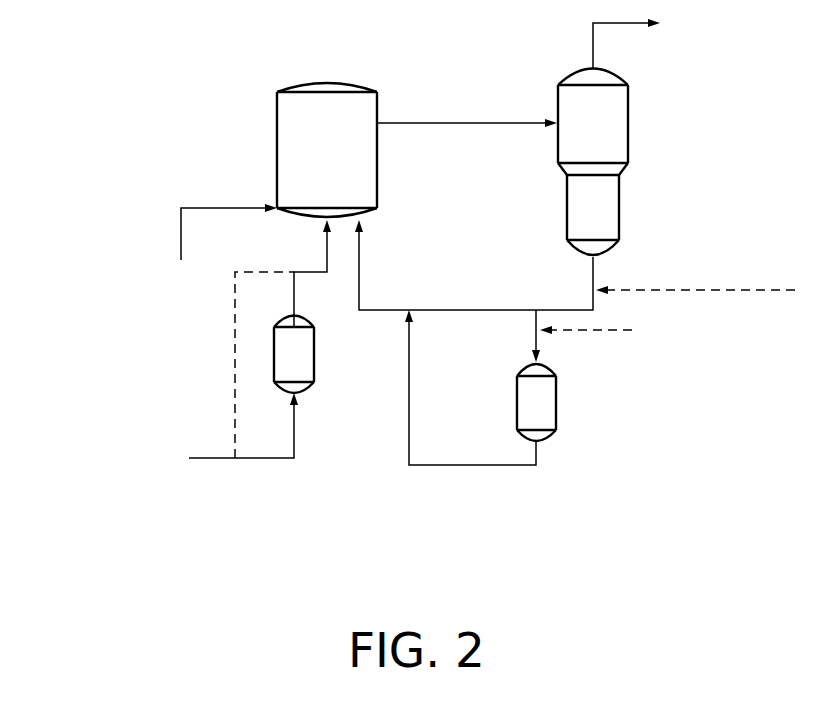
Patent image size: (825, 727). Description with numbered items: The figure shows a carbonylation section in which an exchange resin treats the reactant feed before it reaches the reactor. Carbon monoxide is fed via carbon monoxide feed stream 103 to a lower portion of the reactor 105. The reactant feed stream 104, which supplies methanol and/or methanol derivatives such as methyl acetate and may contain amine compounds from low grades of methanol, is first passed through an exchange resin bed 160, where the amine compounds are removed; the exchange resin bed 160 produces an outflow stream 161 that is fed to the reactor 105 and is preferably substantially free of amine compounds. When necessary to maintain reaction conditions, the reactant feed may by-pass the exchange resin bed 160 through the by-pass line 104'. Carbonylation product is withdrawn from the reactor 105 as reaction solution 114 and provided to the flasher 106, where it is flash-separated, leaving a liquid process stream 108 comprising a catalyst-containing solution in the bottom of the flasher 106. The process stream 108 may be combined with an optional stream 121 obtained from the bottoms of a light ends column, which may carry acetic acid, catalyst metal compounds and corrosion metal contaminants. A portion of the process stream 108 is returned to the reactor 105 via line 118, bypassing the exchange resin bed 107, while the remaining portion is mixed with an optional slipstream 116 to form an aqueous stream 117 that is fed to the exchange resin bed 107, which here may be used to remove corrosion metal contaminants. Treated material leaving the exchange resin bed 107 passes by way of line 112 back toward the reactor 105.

The carbon monoxide feed stream 103 is at (192, 208).
The reactant feed stream 104 is at (221, 470).
The by-pass line 104' is at (203, 365).
The reactor 105 is at (363, 172).
The flasher 106 is at (605, 125).
The exchange resin bed 107 is at (540, 412).
The liquid process stream 108 is at (553, 310).
The vent line 112 is at (465, 467).
The reaction solution stream 114 is at (420, 123).
The slipstream 116 is at (607, 330).
The aqueous stream 117 is at (536, 336).
The return line 118 is at (434, 310).
The light ends column bottoms stream 121 is at (697, 290).
The exchange resin bed 160 is at (300, 357).
The outflow stream 161 is at (327, 253).